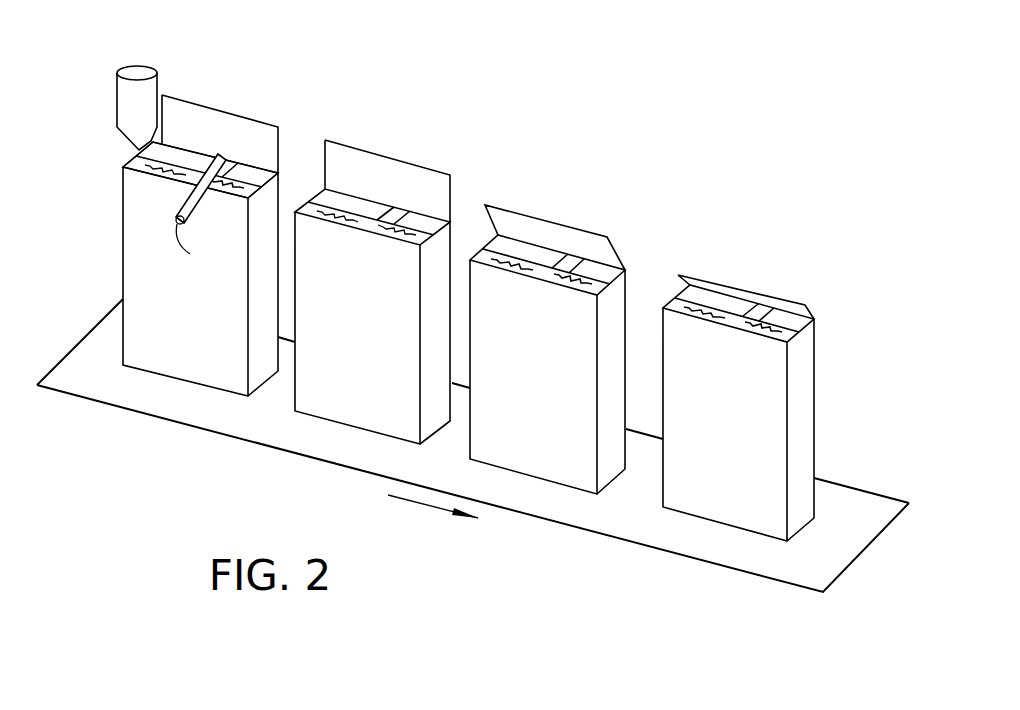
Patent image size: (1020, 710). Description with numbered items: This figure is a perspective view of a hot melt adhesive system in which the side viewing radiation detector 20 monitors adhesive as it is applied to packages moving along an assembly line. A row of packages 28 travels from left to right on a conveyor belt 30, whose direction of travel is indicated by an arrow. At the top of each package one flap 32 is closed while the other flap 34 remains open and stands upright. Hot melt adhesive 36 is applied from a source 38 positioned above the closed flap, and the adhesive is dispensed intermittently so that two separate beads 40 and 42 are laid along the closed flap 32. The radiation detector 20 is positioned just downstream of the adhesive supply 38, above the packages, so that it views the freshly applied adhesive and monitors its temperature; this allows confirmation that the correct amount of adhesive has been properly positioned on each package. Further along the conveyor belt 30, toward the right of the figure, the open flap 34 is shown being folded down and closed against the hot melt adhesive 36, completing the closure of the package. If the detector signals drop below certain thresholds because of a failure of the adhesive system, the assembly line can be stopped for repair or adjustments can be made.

The radiation detector 20 is at (195, 212).
The packages 28 is at (460, 307).
The conveyor belt 30 is at (690, 557).
The flap 32 is at (140, 158).
The flap 34 is at (243, 113).
The hot melt adhesive 36 is at (165, 164).
The source 38 is at (153, 66).
The bead 40 is at (333, 214).
The bead 42 is at (396, 231).